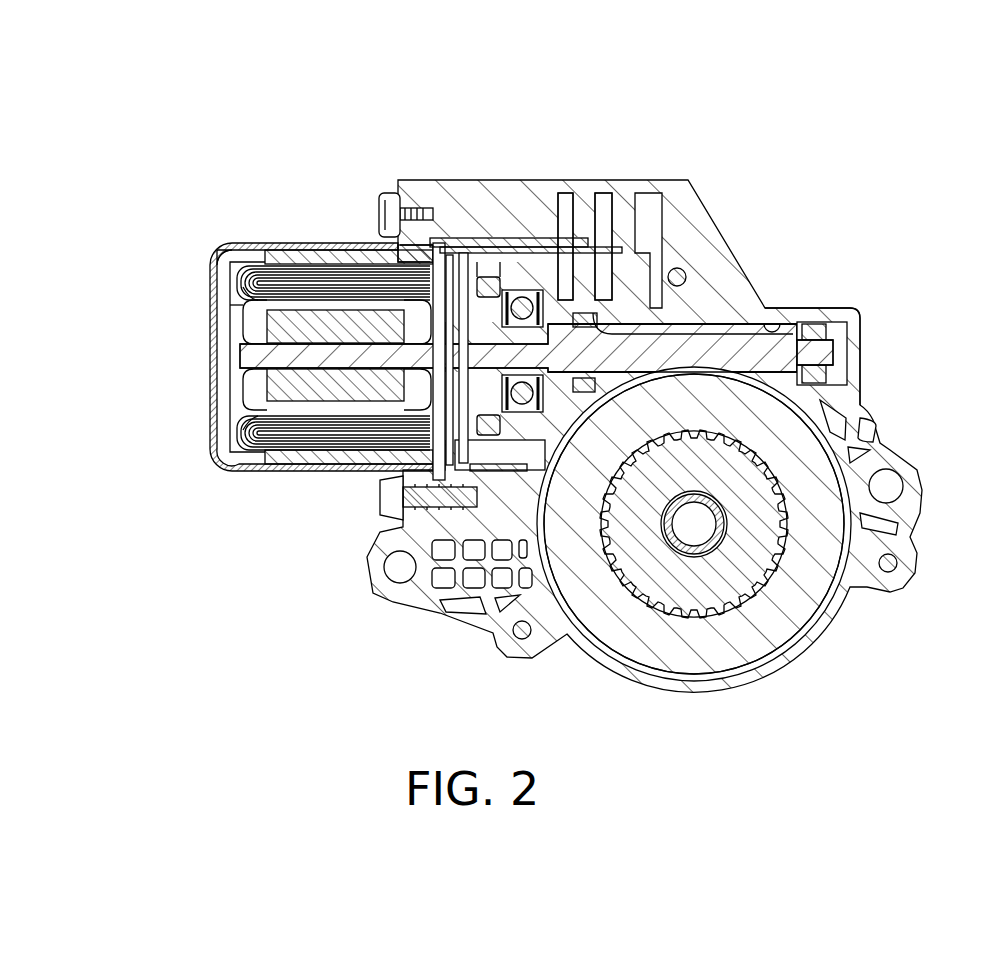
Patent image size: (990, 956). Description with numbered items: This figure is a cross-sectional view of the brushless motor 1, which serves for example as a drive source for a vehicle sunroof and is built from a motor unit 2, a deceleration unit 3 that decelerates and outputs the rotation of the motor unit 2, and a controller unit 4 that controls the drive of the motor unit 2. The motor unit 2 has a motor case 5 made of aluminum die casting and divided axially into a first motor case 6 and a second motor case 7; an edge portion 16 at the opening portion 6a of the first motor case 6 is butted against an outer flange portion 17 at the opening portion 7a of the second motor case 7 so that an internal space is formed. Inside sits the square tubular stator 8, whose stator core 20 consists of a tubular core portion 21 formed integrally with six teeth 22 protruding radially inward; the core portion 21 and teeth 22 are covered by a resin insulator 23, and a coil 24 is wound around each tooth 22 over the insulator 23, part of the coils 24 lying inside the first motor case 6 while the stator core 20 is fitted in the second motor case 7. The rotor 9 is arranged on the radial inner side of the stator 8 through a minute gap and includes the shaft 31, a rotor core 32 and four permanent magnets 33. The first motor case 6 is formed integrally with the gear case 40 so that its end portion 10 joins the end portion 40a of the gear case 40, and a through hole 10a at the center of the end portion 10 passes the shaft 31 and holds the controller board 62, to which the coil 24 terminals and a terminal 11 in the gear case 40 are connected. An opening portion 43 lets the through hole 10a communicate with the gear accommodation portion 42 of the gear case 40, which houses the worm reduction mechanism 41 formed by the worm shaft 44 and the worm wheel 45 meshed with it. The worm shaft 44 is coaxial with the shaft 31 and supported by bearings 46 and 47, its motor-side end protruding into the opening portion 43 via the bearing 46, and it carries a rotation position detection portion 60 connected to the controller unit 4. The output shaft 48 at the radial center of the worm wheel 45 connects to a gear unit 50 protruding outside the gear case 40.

The brushless motor 1 is at (926, 133).
The motor unit 2 is at (203, 240).
The deceleration unit 3 is at (900, 302).
The controller unit 4 is at (438, 404).
The motor case 5 is at (375, 98).
The first motor case 6 is at (417, 180).
The opening portion of first motor case 6a is at (405, 233).
The second motor case 7 is at (294, 242).
The opening portion of second motor case 7a is at (420, 262).
The stator 8 is at (250, 250).
The rotor 9 is at (244, 310).
The end portion 10 is at (493, 180).
The through hole 10a is at (470, 262).
The terminal 11 is at (602, 250).
The edge portion 16 is at (392, 205).
The outer flange portion 17 is at (388, 193).
The stator core 20 is at (136, 455).
The core portion 21 is at (262, 462).
The teeth 22 is at (240, 424).
The insulator 23 is at (263, 302).
The coil 24 is at (243, 287).
The shaft 31 is at (263, 357).
The rotor core 32 is at (263, 384).
The permanent magnets 33 is at (281, 362).
The gear case 40 is at (858, 306).
The end portion of gear case 40a is at (405, 505).
The worm reduction mechanism 41 is at (763, 375).
The gear accommodation portion 42 is at (776, 322).
The opening portion of gear case 43 is at (478, 383).
The worm shaft 44 is at (838, 352).
The worm wheel 45 is at (767, 427).
The bearing 46 is at (527, 290).
The bearing 47 is at (815, 326).
The output shaft 48 is at (692, 578).
The gear unit 50 is at (687, 543).
The rotation position detection portion 60 is at (590, 313).
The controller board 62 is at (364, 464).